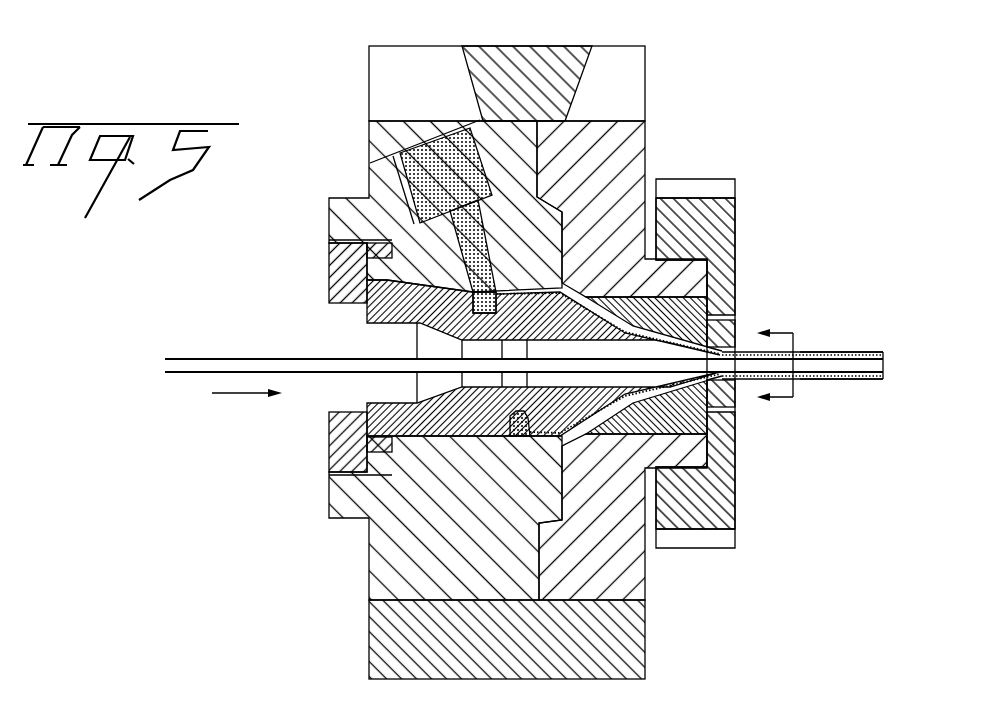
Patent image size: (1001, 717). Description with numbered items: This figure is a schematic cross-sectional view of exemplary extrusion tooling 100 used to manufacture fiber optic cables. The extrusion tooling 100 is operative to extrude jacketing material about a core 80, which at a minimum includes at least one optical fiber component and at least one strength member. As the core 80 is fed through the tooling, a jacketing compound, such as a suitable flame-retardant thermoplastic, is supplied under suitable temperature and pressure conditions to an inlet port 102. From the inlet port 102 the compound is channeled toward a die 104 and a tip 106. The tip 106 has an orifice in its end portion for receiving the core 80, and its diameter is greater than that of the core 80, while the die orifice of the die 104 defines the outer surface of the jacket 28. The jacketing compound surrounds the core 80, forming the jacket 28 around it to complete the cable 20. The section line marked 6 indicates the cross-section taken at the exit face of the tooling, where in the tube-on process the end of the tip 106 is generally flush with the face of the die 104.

The extrusion tooling 100 is at (320, 96).
The inlet port 102 is at (467, 140).
The die 104 is at (735, 335).
The tip 106 is at (735, 432).
The core 80 is at (260, 363).
The jacket 28 is at (803, 353).
The cable 20 is at (866, 346).
The section line for FIG. 6 is at (770, 364).